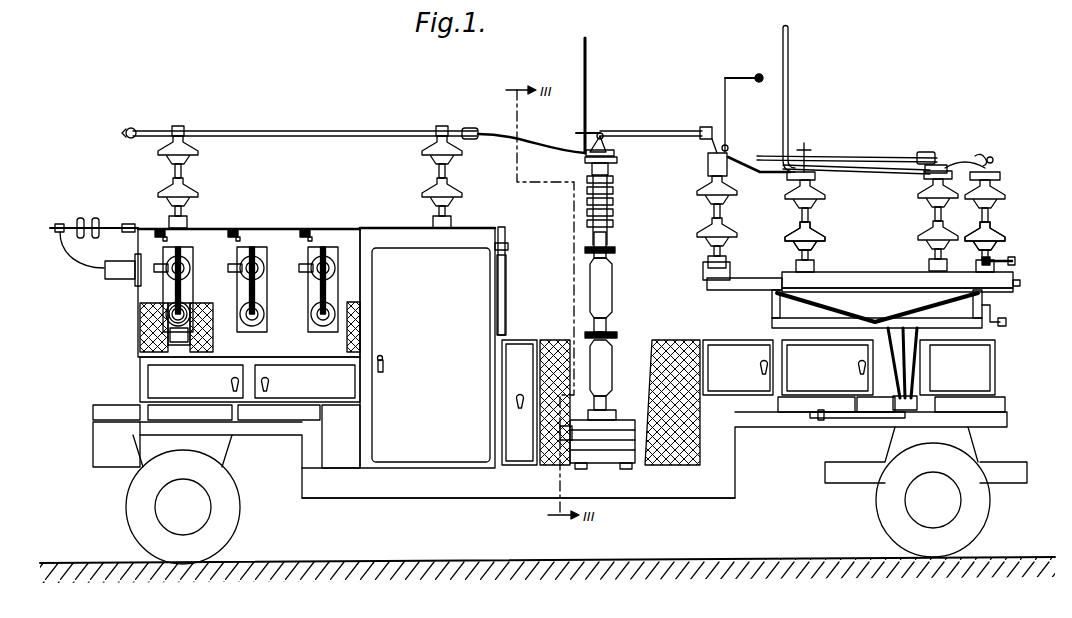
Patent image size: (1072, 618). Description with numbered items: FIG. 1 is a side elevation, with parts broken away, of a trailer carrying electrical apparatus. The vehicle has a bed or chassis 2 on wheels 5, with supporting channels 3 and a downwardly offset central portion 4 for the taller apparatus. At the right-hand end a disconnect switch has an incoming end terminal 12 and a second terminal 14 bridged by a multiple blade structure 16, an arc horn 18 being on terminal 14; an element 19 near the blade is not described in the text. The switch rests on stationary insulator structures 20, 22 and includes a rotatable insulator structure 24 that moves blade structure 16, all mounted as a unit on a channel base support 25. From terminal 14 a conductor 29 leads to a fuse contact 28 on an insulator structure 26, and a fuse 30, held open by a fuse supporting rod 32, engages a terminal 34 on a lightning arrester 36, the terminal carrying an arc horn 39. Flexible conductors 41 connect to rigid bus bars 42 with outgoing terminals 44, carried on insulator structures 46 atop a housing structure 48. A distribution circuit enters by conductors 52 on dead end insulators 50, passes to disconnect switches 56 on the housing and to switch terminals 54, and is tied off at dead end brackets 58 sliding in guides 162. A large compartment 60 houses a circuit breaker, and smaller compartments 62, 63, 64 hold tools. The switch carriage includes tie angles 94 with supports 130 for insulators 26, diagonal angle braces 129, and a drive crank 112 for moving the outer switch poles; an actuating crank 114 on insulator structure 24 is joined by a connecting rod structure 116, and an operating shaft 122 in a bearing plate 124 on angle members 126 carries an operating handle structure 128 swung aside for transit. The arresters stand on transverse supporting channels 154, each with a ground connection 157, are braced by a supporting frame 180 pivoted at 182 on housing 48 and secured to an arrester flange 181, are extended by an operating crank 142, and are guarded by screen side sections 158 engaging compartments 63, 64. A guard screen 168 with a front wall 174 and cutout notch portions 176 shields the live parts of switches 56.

The bed or chassis 2 is at (93, 428).
The supporting channels 3 is at (132, 412).
The downwardly offset central portion 4 is at (480, 499).
The wheels 5 is at (126, 517).
The end terminal 12 is at (1001, 173).
The second terminal 14 is at (780, 186).
The multiple blade structure 16 is at (870, 156).
The arc horn 18 is at (789, 52).
The connector 19 is at (916, 153).
The stationary insulator structure 20 is at (822, 221).
The stationary insulator structure 22 is at (928, 224).
The rotatable insulator structure 24 is at (1002, 228).
The channel base support 25 is at (852, 272).
The insulator structure 26 is at (712, 188).
The fuse contact 28 is at (707, 155).
The conductor 29 is at (745, 161).
The fuse 30 is at (663, 130).
The fuse supporting rod 32 is at (723, 80).
The terminal 34 is at (614, 151).
The lightning arrester 36 is at (613, 199).
The arc horn 39 is at (582, 70).
The flexible conductor 41 is at (536, 146).
The rigid bus bar 42 is at (372, 131).
The outgoing terminal 44 is at (124, 133).
The insulator structure 46 is at (196, 168).
The housing structure 48 is at (278, 229).
The dead end insulator 50 is at (103, 180).
The conductor 52 is at (50, 224).
The switch terminal 54 is at (166, 266).
The disconnect switch 56 is at (250, 289).
The dead end bracket 58 is at (157, 229).
The compartment 60 is at (441, 264).
The compartment 62 is at (282, 369).
The compartment 63 is at (519, 402).
The compartment 64 is at (788, 349).
The tie angle 94 is at (749, 280).
The drive crank 112 is at (1006, 325).
The actuating crank 114 is at (1010, 258).
The connecting rod structure 116 is at (992, 265).
The operating shaft 122 is at (890, 288).
The bearing plate 124 is at (913, 409).
The angle member 126 is at (889, 350).
The operating handle structure 128 is at (872, 419).
The diagonally extending angle brace 129 is at (772, 300).
The support 130 is at (703, 272).
The operating crank 142 is at (566, 424).
The supporting channels 154 is at (622, 469).
The ground connection 157 is at (616, 412).
The side section 158 is at (556, 340).
The guide 162 is at (228, 229).
The guard screen 168 is at (140, 334).
The front wall 174 is at (140, 350).
The cutout notch portion 176 is at (140, 341).
The supporting frame 180 is at (504, 300).
The flange 181 is at (614, 252).
The pivot mounting 182 is at (506, 248).